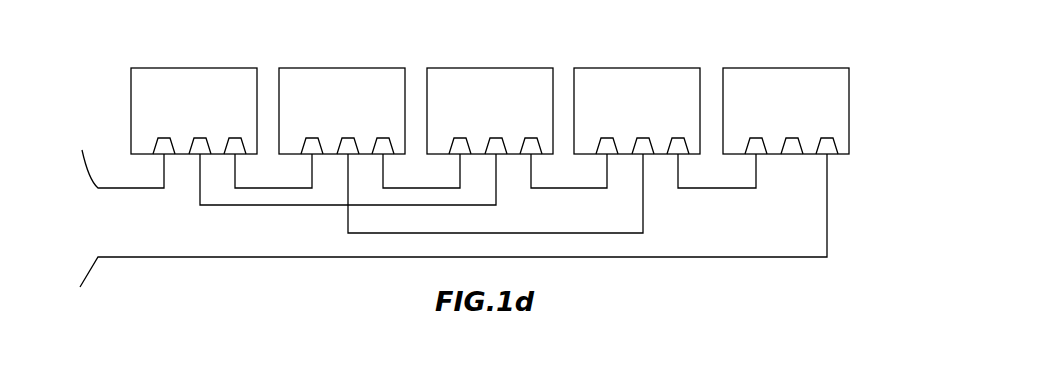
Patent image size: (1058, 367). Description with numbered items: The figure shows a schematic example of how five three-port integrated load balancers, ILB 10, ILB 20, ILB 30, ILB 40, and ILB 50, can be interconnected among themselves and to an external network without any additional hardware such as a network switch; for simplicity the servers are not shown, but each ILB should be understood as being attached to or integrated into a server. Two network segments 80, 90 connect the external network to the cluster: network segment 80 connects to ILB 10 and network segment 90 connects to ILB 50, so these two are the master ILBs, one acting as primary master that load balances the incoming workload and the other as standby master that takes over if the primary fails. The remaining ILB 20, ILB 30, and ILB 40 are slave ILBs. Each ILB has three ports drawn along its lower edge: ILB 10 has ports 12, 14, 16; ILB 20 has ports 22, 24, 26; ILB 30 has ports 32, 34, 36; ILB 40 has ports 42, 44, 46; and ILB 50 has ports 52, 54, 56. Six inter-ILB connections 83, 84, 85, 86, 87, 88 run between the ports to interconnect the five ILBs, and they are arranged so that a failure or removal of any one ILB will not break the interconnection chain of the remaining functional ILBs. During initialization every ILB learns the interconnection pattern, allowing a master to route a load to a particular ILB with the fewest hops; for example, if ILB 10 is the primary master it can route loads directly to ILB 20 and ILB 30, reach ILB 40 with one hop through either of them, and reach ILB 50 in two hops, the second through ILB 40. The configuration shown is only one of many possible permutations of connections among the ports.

The ILB 10 is at (212, 68).
The port 12 is at (168, 138).
The port 14 is at (200, 138).
The port 16 is at (235, 138).
The ILB 20 is at (347, 68).
The port 22 is at (316, 138).
The port 24 is at (348, 138).
The port 26 is at (383, 138).
The ILB 30 is at (498, 68).
The port 32 is at (464, 138).
The port 34 is at (496, 138).
The port 36 is at (531, 138).
The ILB 40 is at (640, 68).
The port 42 is at (611, 138).
The port 44 is at (643, 138).
The port 46 is at (678, 138).
The ILB 50 is at (785, 68).
The port 52 is at (760, 138).
The port 54 is at (792, 138).
The port 56 is at (827, 138).
The network segment 80 is at (111, 158).
The inter-ILB connection 83 is at (260, 189).
The inter-ILB connection 84 is at (452, 189).
The inter-ILB connection 85 is at (597, 189).
The inter-ILB connection 86 is at (732, 189).
The inter-ILB connection 87 is at (313, 206).
The inter-ILB connection 88 is at (621, 234).
The network segment 90 is at (441, 234).